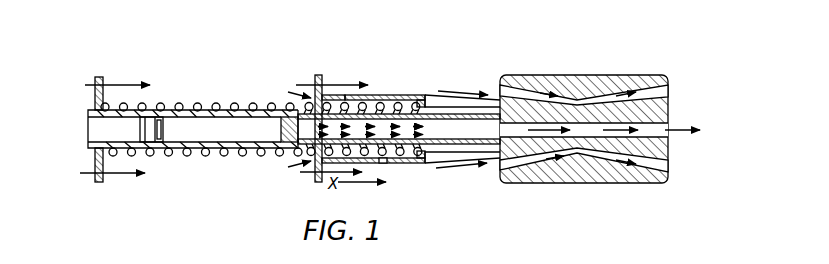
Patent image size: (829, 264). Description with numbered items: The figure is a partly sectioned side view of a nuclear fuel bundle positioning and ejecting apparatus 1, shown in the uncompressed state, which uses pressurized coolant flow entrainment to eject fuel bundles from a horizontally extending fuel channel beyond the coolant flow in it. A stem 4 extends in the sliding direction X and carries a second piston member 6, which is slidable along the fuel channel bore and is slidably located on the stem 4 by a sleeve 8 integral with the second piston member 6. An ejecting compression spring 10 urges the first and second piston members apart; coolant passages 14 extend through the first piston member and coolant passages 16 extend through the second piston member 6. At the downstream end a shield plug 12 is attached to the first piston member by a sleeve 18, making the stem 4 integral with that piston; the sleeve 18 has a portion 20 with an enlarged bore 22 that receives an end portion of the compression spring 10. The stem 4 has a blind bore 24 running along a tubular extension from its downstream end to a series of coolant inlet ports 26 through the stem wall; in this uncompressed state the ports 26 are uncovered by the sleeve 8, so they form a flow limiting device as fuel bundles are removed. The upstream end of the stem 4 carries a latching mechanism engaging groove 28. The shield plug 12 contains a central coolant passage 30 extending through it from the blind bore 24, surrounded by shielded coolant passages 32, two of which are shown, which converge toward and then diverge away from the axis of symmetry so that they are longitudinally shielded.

The nuclear fuel bundle assembly positioning and ejecting apparatus 1 is at (366, 76).
The stem 4 is at (195, 123).
The second piston member 6 is at (99, 77).
The sleeve 8 is at (177, 104).
The ejecting compression spring 10 is at (220, 104).
The shield plug 12 is at (568, 76).
The coolant passages 14 is at (313, 82).
The coolant passages 16 is at (93, 86).
The sleeve 18 is at (409, 97).
The portion 20 is at (326, 100).
The enlarged bore 22 is at (388, 102).
The blind bore 24 is at (446, 127).
The coolant inlet ports 26 is at (382, 164).
The latching mechanism engaging groove 28 is at (158, 117).
The central coolant passage 30 is at (656, 128).
The shielded coolant passages 32 is at (623, 89).